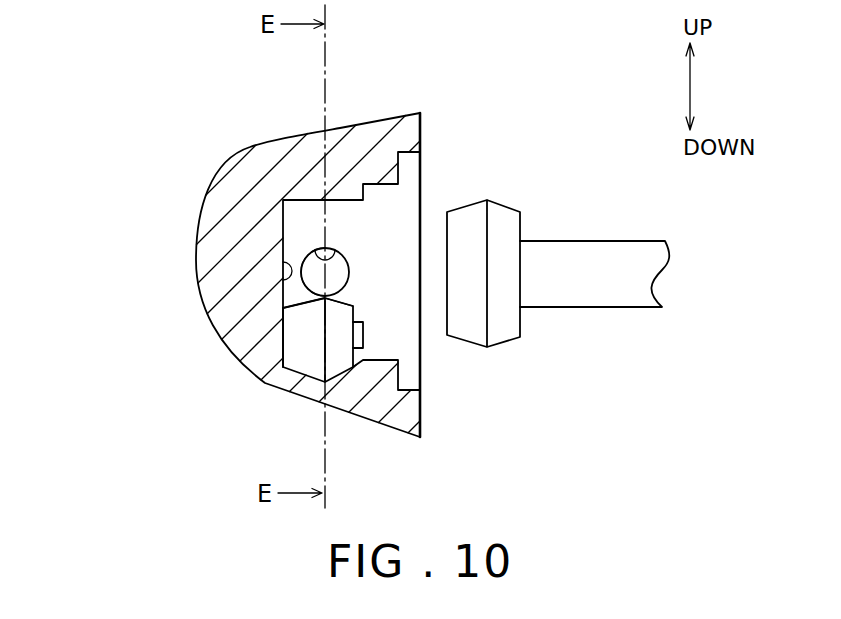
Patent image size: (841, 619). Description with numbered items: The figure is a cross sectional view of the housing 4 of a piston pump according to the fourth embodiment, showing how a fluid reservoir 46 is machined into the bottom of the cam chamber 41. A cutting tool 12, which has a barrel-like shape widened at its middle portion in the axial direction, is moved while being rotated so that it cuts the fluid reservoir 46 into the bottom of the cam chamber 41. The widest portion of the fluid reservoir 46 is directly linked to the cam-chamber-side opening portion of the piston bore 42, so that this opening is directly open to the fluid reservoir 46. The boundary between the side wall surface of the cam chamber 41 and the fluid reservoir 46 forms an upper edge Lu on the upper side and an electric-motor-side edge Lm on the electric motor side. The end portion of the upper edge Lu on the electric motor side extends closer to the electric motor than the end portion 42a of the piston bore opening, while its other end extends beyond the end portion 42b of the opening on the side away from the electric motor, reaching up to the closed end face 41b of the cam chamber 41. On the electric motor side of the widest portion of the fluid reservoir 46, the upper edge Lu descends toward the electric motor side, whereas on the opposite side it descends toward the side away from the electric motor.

The housing / lever support portion 4 is at (260, 128).
The cutting tool 12 is at (495, 232).
The cam chamber 41 is at (350, 270).
The closed end face of the cam chamber 41b is at (286, 283).
The piston bore 42 is at (337, 247).
The end portion, on the electric motor side, of the cam-chamber-side opening portion 42a is at (347, 225).
The end portion, on the side away from the electric motor, of the cam-chamber-side o 42b is at (300, 271).
The fluid reservoir 46 is at (307, 352).
The upper edge Lu is at (314, 298).
The electric-motor-side edge Lm is at (357, 323).